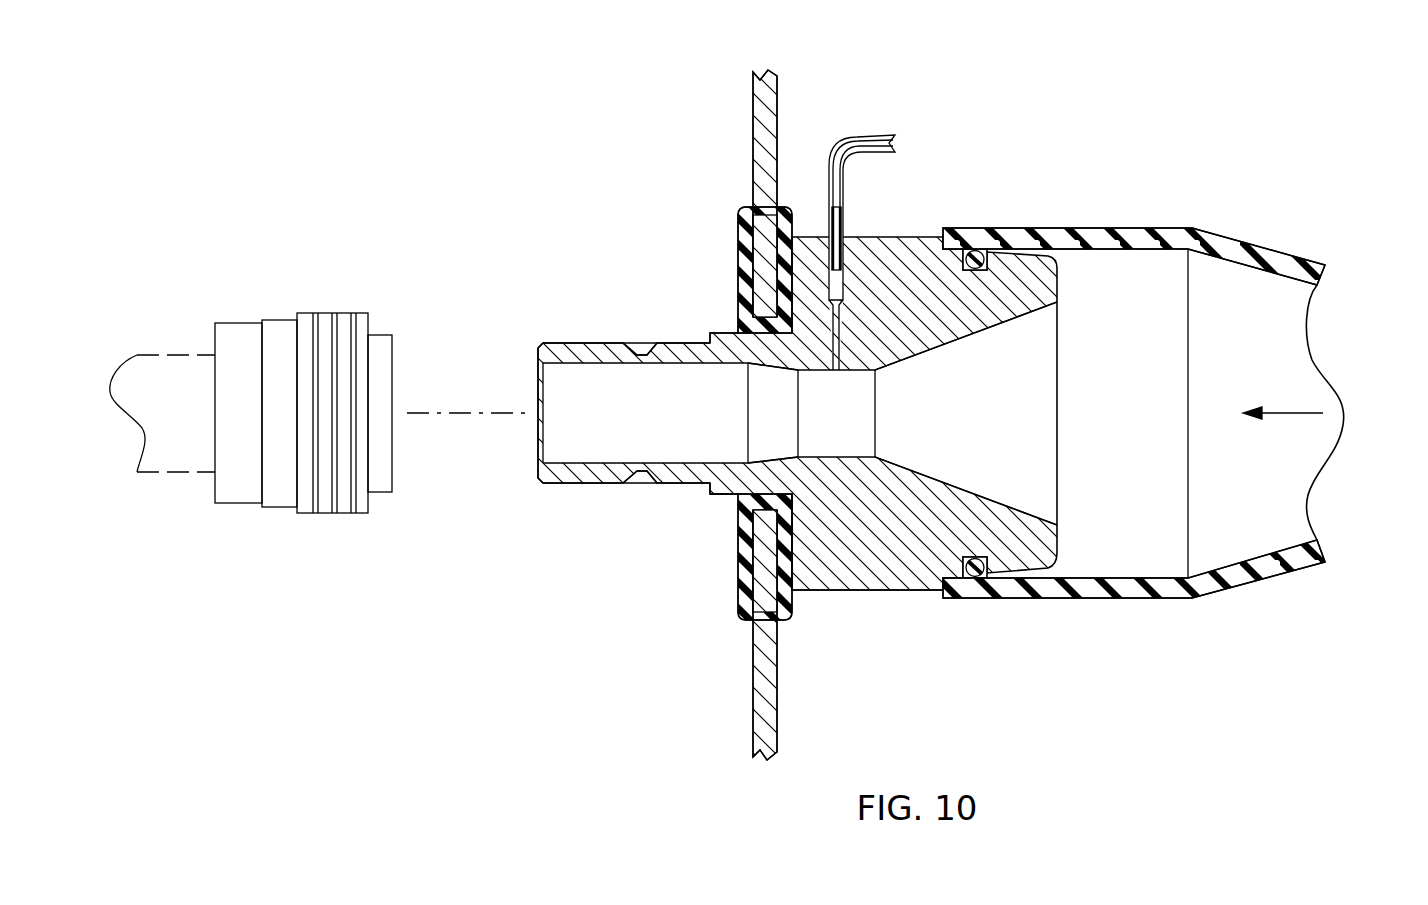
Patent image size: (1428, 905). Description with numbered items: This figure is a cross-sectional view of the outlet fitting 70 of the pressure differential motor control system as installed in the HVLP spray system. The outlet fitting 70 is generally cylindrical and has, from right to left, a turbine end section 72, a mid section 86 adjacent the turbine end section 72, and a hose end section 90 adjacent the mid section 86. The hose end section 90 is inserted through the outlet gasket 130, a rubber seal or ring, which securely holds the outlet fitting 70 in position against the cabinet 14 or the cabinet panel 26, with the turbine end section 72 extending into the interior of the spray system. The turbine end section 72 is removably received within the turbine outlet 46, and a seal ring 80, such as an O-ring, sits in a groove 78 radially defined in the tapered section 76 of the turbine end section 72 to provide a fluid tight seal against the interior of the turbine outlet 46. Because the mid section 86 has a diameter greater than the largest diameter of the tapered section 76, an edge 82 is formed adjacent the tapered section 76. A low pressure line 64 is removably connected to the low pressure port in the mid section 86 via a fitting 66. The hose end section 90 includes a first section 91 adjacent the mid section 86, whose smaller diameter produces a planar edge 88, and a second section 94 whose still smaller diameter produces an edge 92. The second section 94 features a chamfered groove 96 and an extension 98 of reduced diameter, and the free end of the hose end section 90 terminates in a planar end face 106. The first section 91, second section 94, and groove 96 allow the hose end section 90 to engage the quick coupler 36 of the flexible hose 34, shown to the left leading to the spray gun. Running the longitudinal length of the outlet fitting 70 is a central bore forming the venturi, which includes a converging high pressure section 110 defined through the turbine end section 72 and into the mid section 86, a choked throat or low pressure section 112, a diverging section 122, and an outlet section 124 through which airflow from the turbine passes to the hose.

The cabinet panel 26 is at (752, 108).
The cabinet 14 is at (672, 397).
The outlet gasket 130 is at (738, 225).
The low pressure line 64 is at (902, 226).
The fitting 66 is at (843, 233).
The outlet fitting 70 is at (770, 429).
The tapered section 76 is at (1047, 257).
The turbine end section 72 is at (1047, 578).
The turbine outlet 46 is at (1182, 387).
The quick coupler 36 is at (280, 318).
The flexible hose 34 is at (162, 355).
The hose end section 90 is at (565, 343).
The planar end face 106 is at (540, 472).
The chamfered groove 96 is at (647, 353).
The extension 98 is at (627, 483).
The edge 92 is at (712, 337).
The second section 94 is at (690, 485).
The first section 91 is at (727, 495).
The planar edge 88 is at (793, 593).
The mid section 86 is at (895, 590).
The edge 82 is at (938, 590).
The outlet section 124 is at (556, 424).
The diverging section 122 is at (775, 403).
The low pressure section 112 is at (866, 427).
The high pressure section 110 is at (978, 427).
The seal ring 80 is at (975, 268).
The groove 78 is at (977, 557).